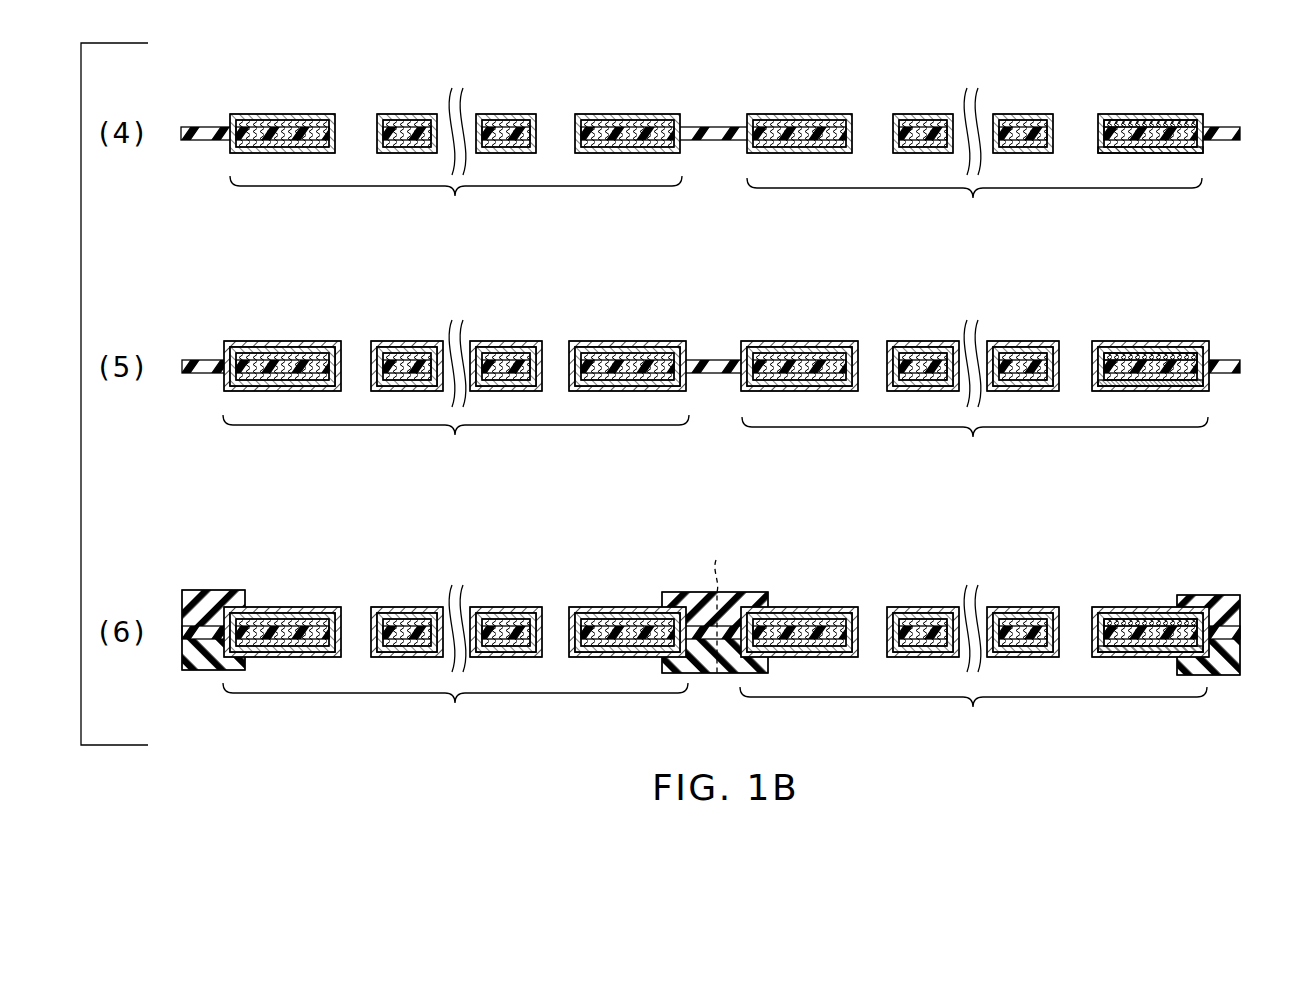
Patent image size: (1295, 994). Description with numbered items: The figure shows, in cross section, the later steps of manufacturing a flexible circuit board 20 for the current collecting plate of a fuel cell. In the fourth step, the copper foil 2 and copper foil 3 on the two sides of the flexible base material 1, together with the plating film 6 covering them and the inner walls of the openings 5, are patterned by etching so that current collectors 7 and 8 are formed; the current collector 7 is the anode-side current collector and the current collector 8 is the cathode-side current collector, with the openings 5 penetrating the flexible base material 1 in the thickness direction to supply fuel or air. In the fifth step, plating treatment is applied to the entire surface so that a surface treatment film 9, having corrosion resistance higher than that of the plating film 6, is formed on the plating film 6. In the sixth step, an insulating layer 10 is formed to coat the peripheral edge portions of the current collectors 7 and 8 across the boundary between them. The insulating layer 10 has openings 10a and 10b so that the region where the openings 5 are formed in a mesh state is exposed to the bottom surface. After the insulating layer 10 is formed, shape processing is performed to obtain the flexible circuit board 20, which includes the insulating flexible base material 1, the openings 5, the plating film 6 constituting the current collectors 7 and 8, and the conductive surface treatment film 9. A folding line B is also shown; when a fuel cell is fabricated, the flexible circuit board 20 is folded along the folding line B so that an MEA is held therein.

The flexible base material 1 is at (1240, 134).
The copper foil 2 is at (1203, 120).
The copper foil 3 is at (1203, 148).
The openings 5 is at (351, 136).
The plating film 6 is at (630, 114).
The current collector 7 is at (456, 456).
The current collector 8 is at (974, 458).
The surface treatment film 9 is at (281, 341).
The insulating layer 10 is at (1222, 595).
The opening 10a is at (250, 592).
The opening 10b is at (768, 592).
The flexible circuit board 20 is at (1113, 527).
The folding line B is at (717, 603).